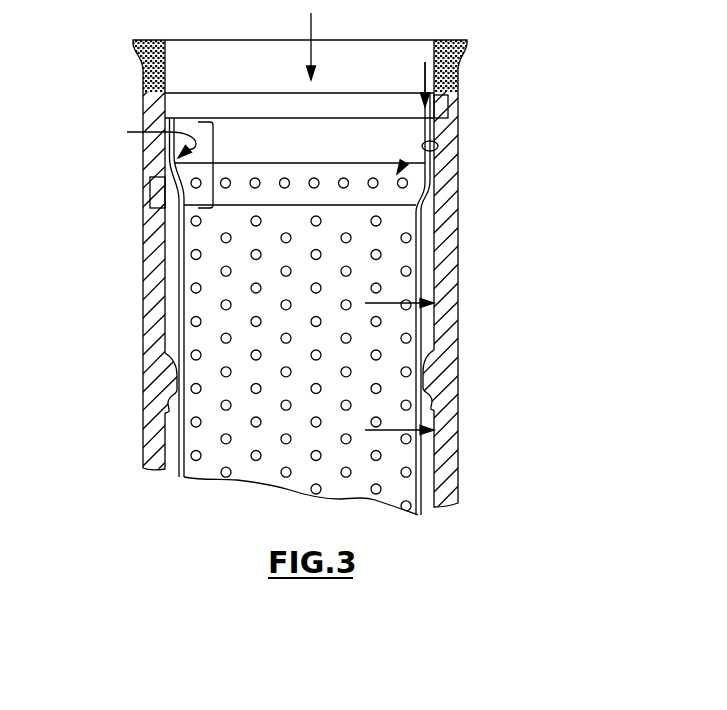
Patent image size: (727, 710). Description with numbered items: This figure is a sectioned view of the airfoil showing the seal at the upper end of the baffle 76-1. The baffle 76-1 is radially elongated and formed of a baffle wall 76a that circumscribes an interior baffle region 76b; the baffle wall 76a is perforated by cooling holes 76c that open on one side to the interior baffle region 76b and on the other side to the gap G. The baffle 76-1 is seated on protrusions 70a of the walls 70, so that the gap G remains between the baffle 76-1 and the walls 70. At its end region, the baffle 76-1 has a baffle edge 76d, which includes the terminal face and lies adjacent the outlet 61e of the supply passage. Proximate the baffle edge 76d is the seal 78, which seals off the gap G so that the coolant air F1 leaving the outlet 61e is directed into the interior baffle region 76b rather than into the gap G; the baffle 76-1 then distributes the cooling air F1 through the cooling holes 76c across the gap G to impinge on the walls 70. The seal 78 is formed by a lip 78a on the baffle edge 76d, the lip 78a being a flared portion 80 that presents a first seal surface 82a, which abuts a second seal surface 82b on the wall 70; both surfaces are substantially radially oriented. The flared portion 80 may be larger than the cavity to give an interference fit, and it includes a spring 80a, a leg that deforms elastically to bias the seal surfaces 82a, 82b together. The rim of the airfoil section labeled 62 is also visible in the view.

The outlet 61e is at (393, 52).
The inlet rim 62 is at (462, 55).
The wall 70 is at (458, 350).
The protrusion 70a is at (436, 409).
The baffle wall 76a is at (421, 328).
The interior baffle region 76b is at (213, 290).
The cooling holes 76c is at (381, 288).
The baffle edge 76d is at (186, 117).
The baffle 76-1 is at (436, 458).
The seal 78 is at (450, 133).
The lip 78a is at (138, 140).
The flared portion 80 is at (214, 165).
The spring 80a is at (163, 198).
The first seal surface 82a is at (440, 119).
The second seal surface 82b is at (440, 147).
The gap G is at (430, 220).
The coolant air F1 is at (327, 50).